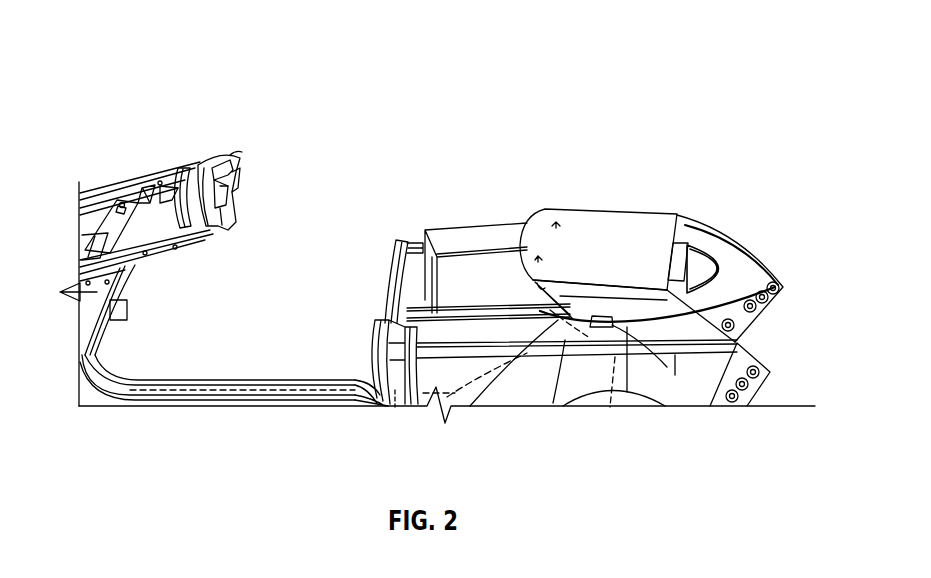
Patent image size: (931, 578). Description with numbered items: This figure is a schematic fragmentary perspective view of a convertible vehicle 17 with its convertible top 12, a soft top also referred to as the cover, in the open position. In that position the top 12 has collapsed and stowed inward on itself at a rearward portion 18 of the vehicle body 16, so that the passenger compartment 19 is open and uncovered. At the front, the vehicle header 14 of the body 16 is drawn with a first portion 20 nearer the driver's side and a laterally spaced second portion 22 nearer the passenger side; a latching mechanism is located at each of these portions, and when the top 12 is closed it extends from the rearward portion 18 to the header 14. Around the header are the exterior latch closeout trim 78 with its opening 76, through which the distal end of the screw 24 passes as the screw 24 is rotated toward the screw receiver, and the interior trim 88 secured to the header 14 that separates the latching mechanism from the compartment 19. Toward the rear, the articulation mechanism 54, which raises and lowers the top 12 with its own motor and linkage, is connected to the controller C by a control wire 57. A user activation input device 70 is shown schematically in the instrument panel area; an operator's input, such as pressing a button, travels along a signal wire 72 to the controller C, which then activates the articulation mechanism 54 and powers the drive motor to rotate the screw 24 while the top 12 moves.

The convertible top 12 is at (623, 213).
The vehicle header 14 is at (243, 176).
The vehicle body 16 is at (512, 396).
The convertible vehicle 17 is at (535, 163).
The rearward portion 18 is at (553, 403).
The passenger compartment 19 is at (248, 363).
The first portion 20 is at (192, 167).
The second portion 22 is at (240, 158).
The screw 24 is at (523, 218).
The articulation mechanism 54 is at (600, 316).
The control wire 57 is at (540, 295).
The user activation input device 70 is at (127, 310).
The signal wire 72 is at (395, 408).
The opening 76 is at (228, 162).
The exterior latch closeout trim 78 is at (196, 176).
The interior trim 88 is at (230, 188).
The controller C is at (608, 406).